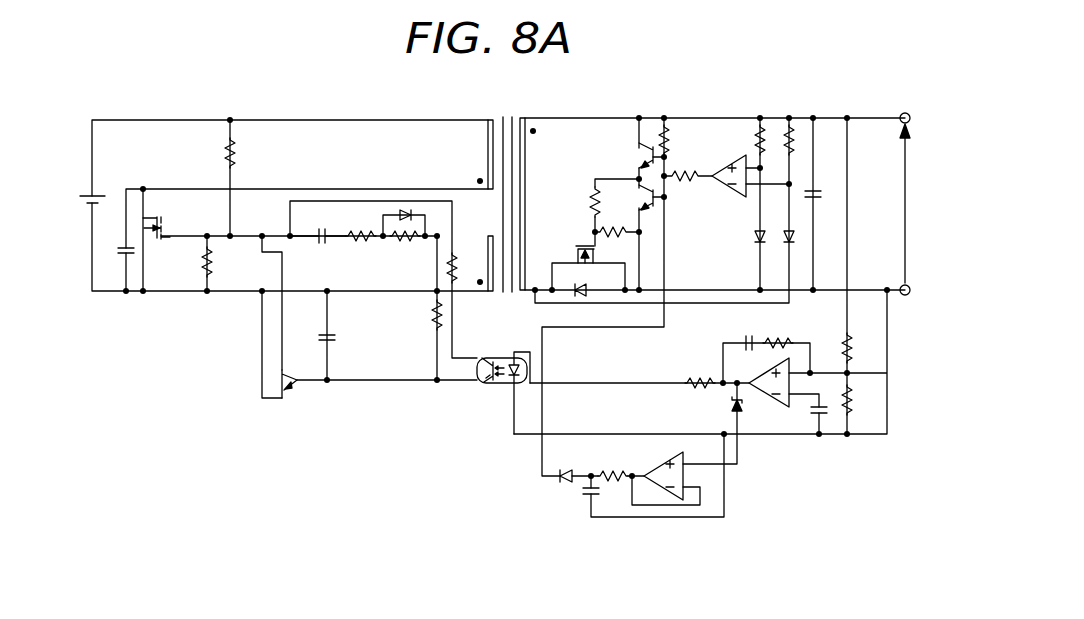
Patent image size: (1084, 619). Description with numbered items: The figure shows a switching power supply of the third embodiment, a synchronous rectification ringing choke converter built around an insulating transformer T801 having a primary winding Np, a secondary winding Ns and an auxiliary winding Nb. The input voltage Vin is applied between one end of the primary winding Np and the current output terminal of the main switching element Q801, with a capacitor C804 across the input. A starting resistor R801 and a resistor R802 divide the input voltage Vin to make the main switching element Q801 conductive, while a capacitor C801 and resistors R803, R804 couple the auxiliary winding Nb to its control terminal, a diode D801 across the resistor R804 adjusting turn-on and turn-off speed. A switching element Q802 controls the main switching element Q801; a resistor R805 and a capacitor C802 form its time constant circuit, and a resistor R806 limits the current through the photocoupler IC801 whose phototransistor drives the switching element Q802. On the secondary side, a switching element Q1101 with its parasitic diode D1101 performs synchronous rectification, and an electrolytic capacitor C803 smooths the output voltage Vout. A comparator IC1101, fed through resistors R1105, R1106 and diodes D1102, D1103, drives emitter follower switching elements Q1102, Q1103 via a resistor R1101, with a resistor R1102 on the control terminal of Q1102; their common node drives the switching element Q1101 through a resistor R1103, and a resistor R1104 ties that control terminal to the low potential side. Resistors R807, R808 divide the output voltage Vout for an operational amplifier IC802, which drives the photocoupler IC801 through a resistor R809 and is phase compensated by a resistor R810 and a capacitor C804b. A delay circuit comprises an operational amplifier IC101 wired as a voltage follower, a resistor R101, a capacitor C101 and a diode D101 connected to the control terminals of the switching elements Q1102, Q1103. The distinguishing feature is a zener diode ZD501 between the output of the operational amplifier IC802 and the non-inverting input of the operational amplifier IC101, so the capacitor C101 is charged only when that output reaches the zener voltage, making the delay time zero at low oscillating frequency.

The input voltage Vin is at (82, 188).
The starting resistor R801 is at (205, 153).
The resistor R802 is at (184, 262).
The capacitor C804 is at (121, 255).
The main switching element Q801 is at (176, 221).
The switching element Q802 is at (307, 394).
The capacitor C801 is at (318, 251).
The resistor R803 is at (354, 222).
The resistor R804 is at (406, 252).
The diode D801 is at (406, 209).
The capacitor C802 is at (349, 339).
The resistor R805 is at (413, 315).
The resistor R806 is at (458, 270).
The insulating transformer T801 is at (506, 189).
The primary winding Np is at (468, 154).
The auxiliary winding Nb is at (469, 250).
The secondary winding Ns is at (542, 149).
The photocoupler IC801 is at (493, 393).
The output voltage Vout is at (886, 204).
The switching element Q1102 is at (618, 156).
The switching element Q1103 is at (646, 198).
The resistor R1103 is at (566, 203).
The switching element Q1101 is at (563, 242).
The resistor R1104 is at (623, 234).
The parasitic diode D1101 is at (579, 300).
The resistor R1102 is at (694, 135).
The resistor R1101 is at (695, 161).
The comparator IC1101 is at (714, 186).
The resistor R1105 is at (741, 120).
The resistor R1106 is at (808, 120).
The diode D1102 is at (732, 236).
The diode D1103 is at (797, 238).
The electrolytic capacitor C803 is at (823, 190).
The operational amplifier IC802 is at (772, 402).
The resistor R809 is at (691, 370).
The capacitor C804b is at (741, 332).
The resistor R810 is at (787, 331).
The zener diode ZD501 is at (707, 406).
The resistor R807 is at (857, 350).
The resistor R808 is at (850, 410).
The operational amplifier IC101 is at (662, 487).
The diode D101 is at (566, 464).
The resistor R101 is at (618, 464).
The capacitor C101 is at (572, 505).